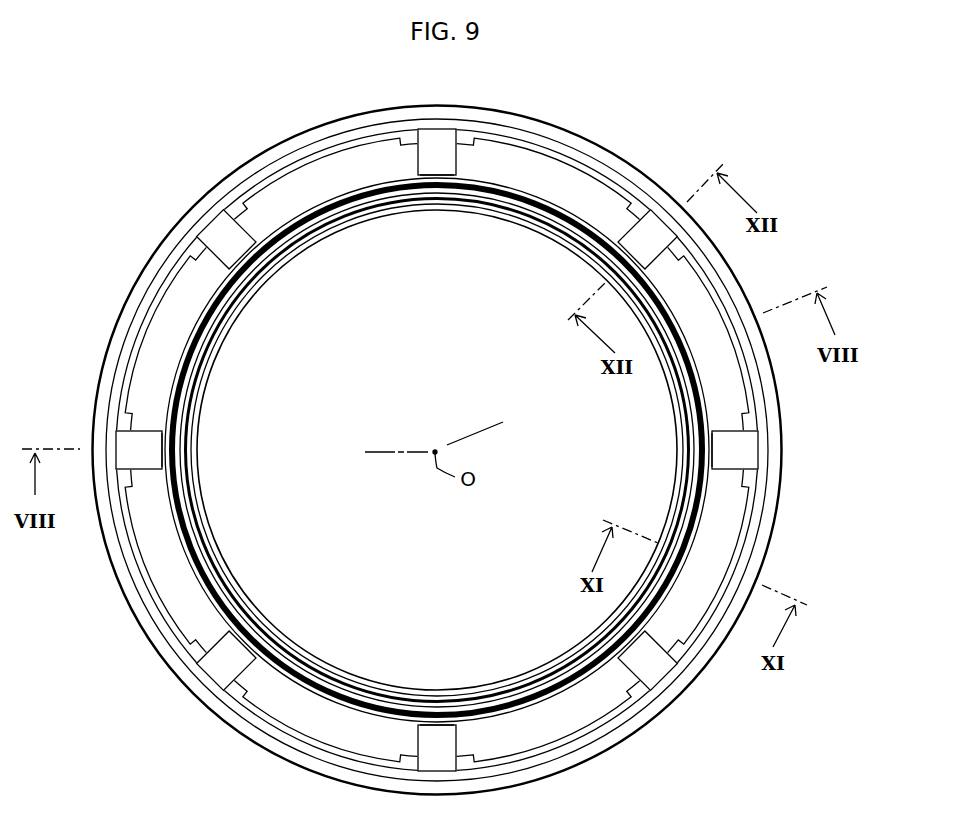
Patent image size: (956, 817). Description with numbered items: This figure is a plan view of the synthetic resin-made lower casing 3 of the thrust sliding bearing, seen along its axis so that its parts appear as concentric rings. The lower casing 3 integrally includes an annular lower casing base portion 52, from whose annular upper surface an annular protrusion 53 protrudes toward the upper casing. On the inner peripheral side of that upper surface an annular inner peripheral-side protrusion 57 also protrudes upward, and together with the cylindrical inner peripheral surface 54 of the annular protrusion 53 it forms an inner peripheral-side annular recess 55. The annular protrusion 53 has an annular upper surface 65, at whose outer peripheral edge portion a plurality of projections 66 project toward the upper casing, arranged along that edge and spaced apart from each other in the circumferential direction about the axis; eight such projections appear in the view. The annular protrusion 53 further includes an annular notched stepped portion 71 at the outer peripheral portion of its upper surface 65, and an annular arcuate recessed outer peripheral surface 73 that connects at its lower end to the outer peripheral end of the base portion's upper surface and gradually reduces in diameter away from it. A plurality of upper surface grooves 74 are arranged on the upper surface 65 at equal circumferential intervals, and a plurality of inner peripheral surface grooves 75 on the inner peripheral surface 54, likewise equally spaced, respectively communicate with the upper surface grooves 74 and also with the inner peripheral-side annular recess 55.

The lower casing 3 is at (127, 627).
The lower casing base portion 52 is at (774, 497).
The annular protrusion 53 is at (584, 186).
The cylindrical inner peripheral surface 54 is at (368, 207).
The inner peripheral-side annular recess 55 is at (345, 695).
The inner peripheral-side protrusion 57 is at (550, 232).
The annular upper surface 65 is at (307, 183).
The projections 66 is at (262, 185).
The annular notched stepped portion 71 is at (648, 192).
The annular arcuate recessed outer peripheral surface 73 is at (192, 222).
The upper surface grooves 74 is at (437, 150).
The inner peripheral surface grooves 75 is at (437, 172).